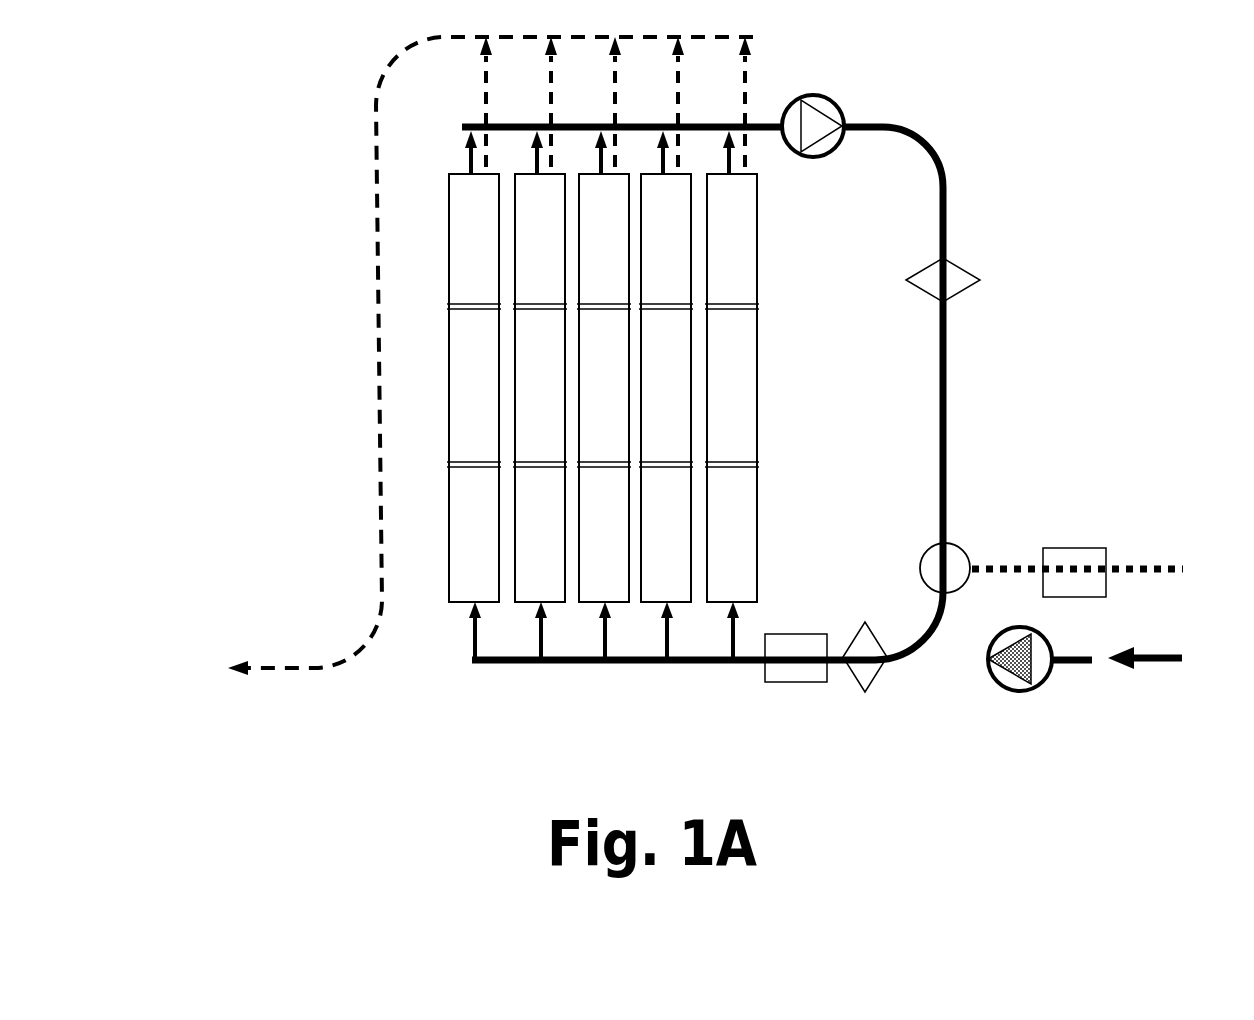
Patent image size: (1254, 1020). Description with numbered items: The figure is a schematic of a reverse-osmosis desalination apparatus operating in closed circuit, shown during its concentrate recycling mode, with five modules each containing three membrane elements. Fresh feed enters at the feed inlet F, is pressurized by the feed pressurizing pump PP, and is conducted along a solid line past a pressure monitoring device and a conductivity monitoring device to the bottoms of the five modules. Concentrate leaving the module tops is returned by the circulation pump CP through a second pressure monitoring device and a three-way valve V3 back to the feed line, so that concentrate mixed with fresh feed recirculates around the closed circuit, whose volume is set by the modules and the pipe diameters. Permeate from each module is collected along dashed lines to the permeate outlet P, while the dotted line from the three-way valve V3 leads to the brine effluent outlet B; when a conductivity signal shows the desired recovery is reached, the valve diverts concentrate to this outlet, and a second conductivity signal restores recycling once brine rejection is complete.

The circulation pump CP is at (813, 149).
The feed pressurizing pump PP is at (1020, 682).
The three-way valve V3 is at (913, 568).
The permeate outlet P is at (470, 367).
The brine effluent outlet B is at (1106, 566).
The feed inlet F is at (1174, 659).